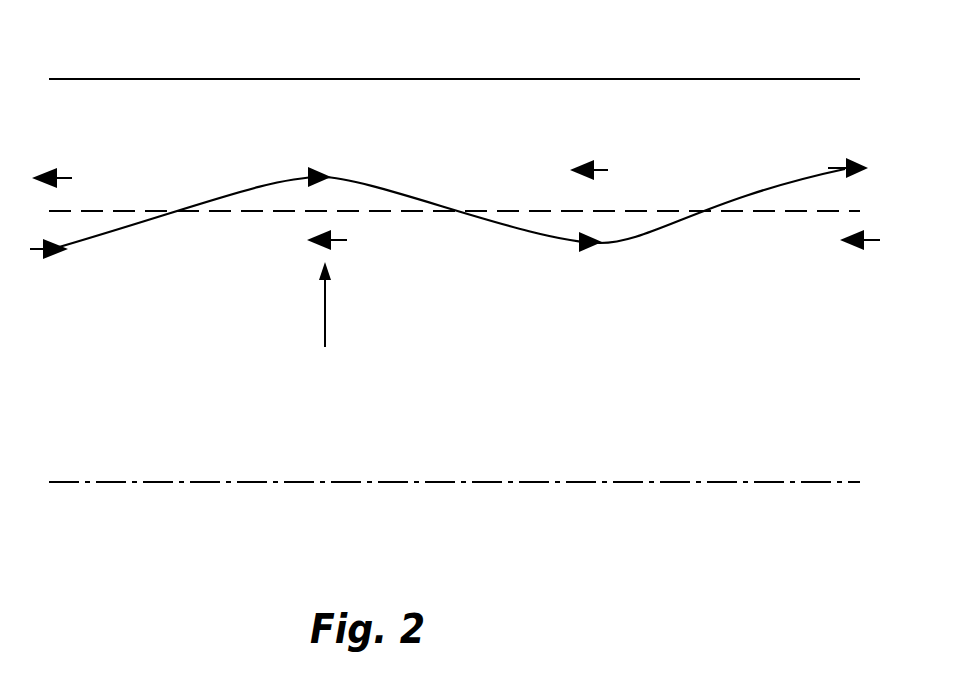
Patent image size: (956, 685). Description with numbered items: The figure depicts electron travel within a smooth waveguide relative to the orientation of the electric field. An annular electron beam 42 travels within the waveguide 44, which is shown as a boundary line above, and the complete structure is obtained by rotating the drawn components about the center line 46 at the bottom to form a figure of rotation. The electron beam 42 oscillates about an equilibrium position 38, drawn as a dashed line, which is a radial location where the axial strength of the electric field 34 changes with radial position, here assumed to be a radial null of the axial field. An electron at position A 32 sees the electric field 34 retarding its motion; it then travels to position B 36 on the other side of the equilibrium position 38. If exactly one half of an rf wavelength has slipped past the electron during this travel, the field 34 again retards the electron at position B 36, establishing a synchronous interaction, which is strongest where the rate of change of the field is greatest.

The position A 32 is at (326, 173).
The electric field 34 is at (342, 310).
The position B 36 is at (602, 246).
The equilibrium position 38 is at (674, 186).
The annular electron beam 42 is at (153, 231).
The waveguide 44 is at (343, 70).
The center line 46 is at (287, 491).